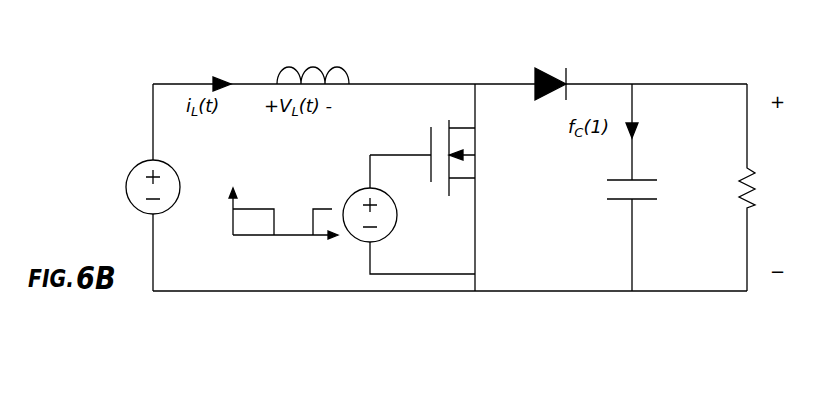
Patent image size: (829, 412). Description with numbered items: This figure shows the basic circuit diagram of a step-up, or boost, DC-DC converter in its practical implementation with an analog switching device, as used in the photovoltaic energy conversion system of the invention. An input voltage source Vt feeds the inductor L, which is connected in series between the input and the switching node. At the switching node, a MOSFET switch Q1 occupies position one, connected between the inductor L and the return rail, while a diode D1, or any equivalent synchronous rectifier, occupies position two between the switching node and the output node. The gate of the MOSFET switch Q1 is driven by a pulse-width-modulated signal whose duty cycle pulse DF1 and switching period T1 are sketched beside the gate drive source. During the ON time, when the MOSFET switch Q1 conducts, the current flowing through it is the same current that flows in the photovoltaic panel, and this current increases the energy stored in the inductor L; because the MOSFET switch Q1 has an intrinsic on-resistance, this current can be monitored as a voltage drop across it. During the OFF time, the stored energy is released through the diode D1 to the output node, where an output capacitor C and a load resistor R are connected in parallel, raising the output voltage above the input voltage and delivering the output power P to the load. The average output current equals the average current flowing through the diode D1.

The input voltage source Vt is at (138, 187).
The inductor L is at (313, 61).
The diode D1 is at (548, 70).
The MOSFET switch Q1 is at (432, 197).
The duty factor pulse DF1 is at (283, 228).
The switching period T1 is at (317, 258).
The output capacitor C is at (616, 187).
The load resistor R is at (727, 187).
The output power P is at (785, 190).